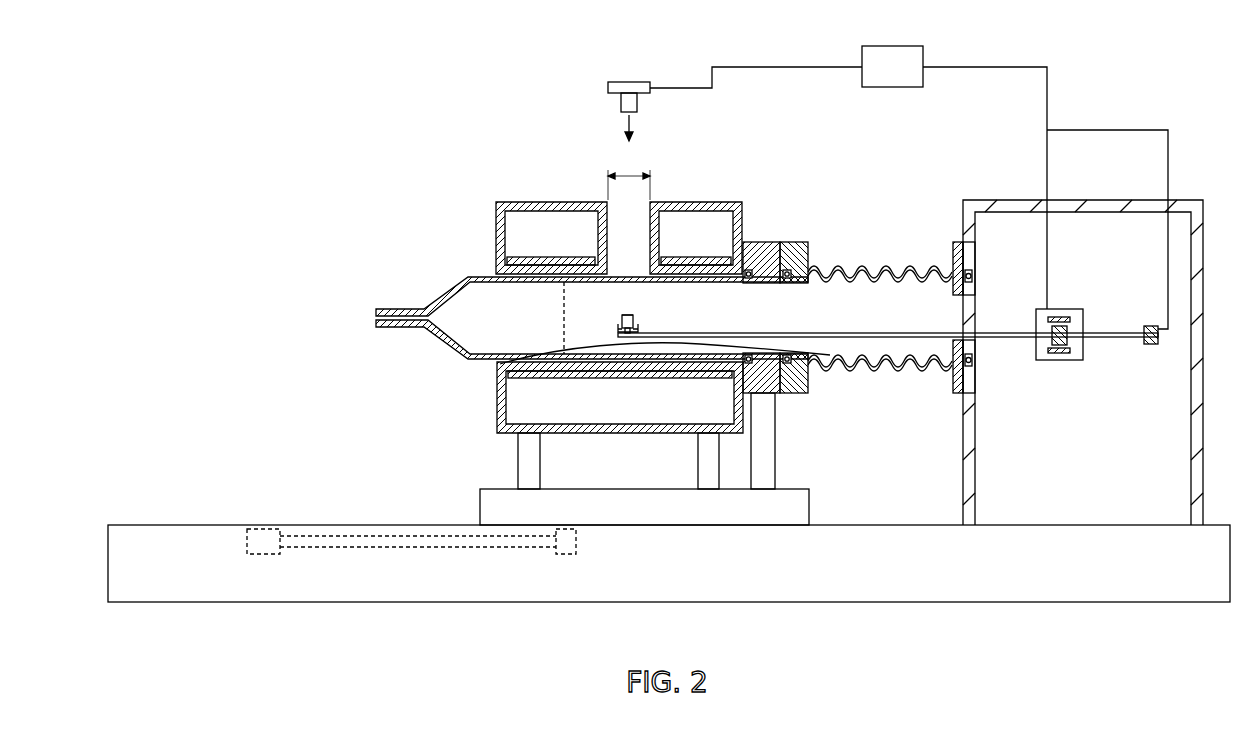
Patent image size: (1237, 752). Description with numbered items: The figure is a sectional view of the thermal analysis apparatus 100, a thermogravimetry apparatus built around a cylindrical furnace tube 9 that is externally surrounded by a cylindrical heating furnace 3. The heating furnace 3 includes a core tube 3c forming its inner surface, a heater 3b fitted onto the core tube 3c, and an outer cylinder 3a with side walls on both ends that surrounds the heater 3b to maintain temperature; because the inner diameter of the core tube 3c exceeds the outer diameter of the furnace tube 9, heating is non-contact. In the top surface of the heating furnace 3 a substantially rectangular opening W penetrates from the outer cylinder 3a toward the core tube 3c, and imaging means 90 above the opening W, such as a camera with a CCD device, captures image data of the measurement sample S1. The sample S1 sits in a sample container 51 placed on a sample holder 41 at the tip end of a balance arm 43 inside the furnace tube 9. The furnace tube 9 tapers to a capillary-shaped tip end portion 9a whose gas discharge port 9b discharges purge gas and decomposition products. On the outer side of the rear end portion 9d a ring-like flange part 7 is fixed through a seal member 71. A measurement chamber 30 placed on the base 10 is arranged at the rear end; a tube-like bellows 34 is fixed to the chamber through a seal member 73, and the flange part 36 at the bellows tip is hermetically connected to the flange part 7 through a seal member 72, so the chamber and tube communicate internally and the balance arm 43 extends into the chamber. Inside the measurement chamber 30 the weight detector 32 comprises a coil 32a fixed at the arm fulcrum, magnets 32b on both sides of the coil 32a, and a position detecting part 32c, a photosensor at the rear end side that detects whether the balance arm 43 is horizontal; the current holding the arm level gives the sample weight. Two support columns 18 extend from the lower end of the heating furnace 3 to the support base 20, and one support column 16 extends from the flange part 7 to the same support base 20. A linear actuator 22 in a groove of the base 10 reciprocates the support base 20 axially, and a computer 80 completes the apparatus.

The thermal analysis apparatus 100 is at (1134, 91).
The base 10 is at (964, 596).
The support base 20 is at (806, 512).
The support columns 18 is at (707, 468).
The support column 16 is at (775, 431).
The linear actuator 22 is at (291, 533).
The furnace tube 9 is at (577, 353).
The tip end portion 9a is at (400, 326).
The gas discharge port 9b is at (362, 320).
The rear end portion 9d is at (500, 364).
The heating furnace 3 is at (619, 274).
The outer cylinder 3a is at (506, 203).
The heater 3b is at (518, 257).
The core tube 3c is at (568, 257).
The opening W is at (629, 178).
The flange part 7 is at (769, 242).
The flange part 36 is at (800, 242).
The seal member 71 is at (748, 268).
The seal member 72 is at (788, 268).
The bellows 34 is at (847, 266).
The seal member 73 is at (975, 278).
The balance arm 43 is at (807, 332).
The sample holder 41 is at (638, 328).
The sample container 51 is at (636, 315).
The measurement sample S1 is at (622, 318).
The measurement chamber 30 is at (1103, 200).
The weight detector 32 is at (1111, 379).
The coil 32a is at (1066, 345).
The magnets 32b is at (1060, 354).
The position detecting part 32c is at (1164, 372).
The computer 80 is at (897, 46).
The imaging means 90 is at (629, 82).